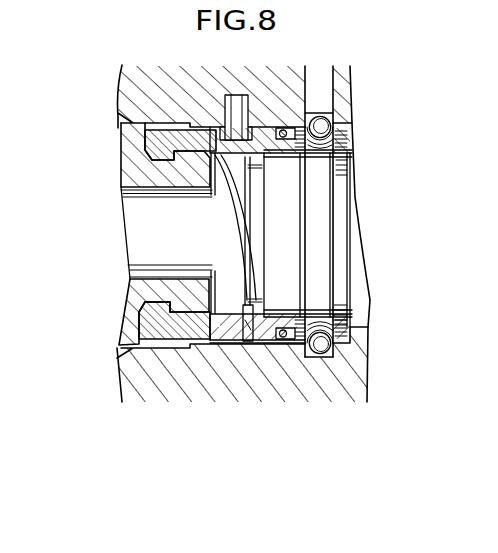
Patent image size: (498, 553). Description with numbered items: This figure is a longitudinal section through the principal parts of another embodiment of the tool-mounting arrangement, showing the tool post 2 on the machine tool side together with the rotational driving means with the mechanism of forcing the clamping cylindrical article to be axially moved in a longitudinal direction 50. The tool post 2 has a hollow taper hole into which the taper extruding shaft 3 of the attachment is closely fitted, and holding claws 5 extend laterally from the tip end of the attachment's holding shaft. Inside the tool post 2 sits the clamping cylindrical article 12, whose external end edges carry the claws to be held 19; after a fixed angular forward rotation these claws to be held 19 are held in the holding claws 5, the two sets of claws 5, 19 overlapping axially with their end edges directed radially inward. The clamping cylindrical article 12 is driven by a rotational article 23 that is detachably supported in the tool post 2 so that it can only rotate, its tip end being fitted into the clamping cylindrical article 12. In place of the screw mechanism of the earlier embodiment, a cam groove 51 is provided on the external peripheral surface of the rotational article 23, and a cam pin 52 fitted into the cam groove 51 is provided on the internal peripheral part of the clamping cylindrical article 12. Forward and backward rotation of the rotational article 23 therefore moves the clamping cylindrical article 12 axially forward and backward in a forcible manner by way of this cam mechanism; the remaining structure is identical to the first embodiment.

The tool post 2 is at (309, 378).
The taper extruding shaft 3 is at (126, 153).
The holding claw 5 is at (189, 306).
The clamping cylindrical article 12 is at (170, 332).
The claw to be held 19 is at (145, 306).
The rotational article 23 is at (287, 248).
The rotational driving means with mechanism of forcing the clamping cylindrical arti 50 is at (252, 368).
The cam groove 51 is at (233, 233).
The cam pin 52 is at (216, 332).